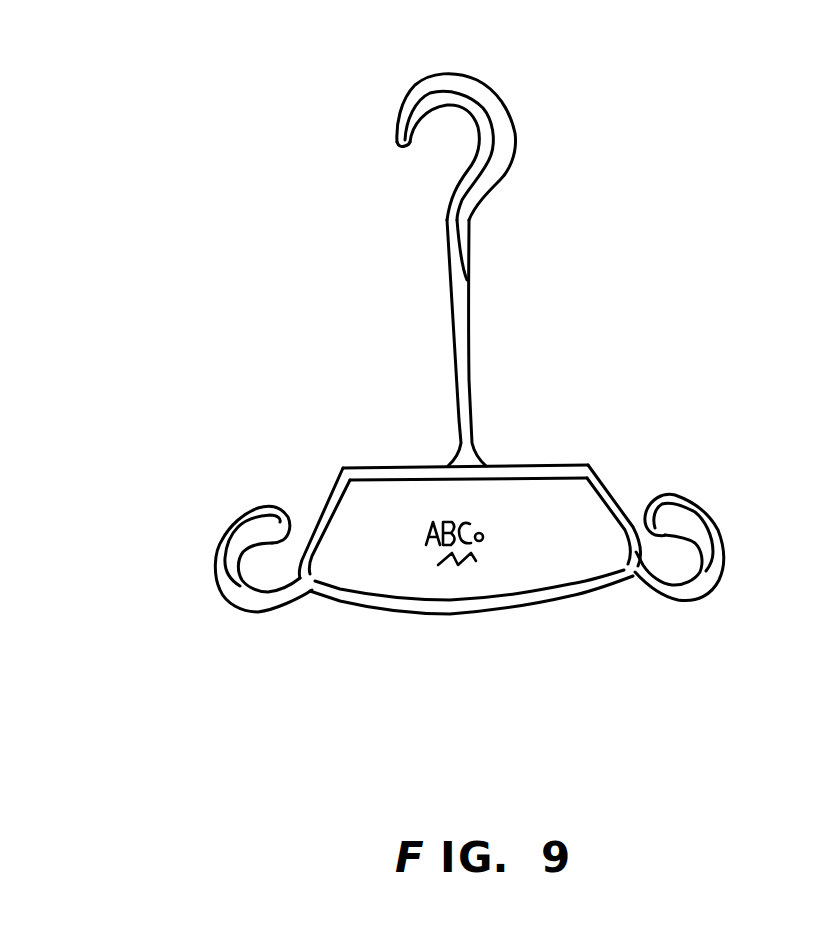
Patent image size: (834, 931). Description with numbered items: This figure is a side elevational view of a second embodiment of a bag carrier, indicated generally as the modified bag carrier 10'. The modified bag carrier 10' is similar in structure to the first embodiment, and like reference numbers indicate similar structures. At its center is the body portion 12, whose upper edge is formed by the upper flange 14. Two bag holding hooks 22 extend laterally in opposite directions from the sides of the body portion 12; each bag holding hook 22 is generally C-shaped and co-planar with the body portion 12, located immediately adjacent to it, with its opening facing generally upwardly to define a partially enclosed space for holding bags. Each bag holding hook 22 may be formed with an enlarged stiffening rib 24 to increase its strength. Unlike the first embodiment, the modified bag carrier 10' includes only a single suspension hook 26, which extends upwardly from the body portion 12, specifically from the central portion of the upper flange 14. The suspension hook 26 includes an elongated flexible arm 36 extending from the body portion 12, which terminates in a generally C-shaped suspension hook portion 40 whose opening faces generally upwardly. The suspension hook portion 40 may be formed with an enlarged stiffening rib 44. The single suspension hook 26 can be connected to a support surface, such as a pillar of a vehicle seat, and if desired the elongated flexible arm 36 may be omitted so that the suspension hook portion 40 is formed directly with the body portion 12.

The modified bag carrier 10' is at (480, 350).
The body portion 12 is at (522, 612).
The upper flange 14 is at (508, 466).
The bag holding hook 22 is at (218, 575).
The stiffening rib 24 is at (297, 517).
The suspension hook 26 is at (536, 132).
The elongated flexible arm 36 is at (453, 333).
The suspension hook portion 40 is at (487, 98).
The stiffening rib 44 is at (402, 148).